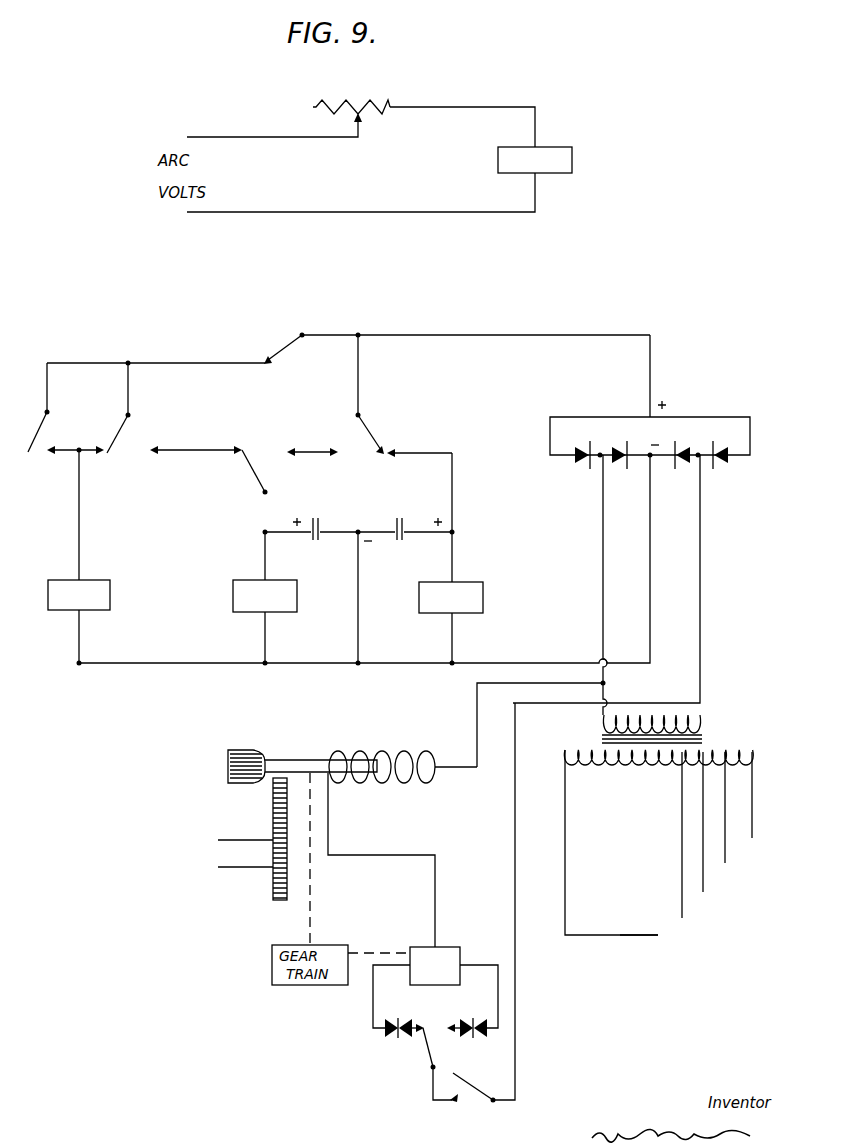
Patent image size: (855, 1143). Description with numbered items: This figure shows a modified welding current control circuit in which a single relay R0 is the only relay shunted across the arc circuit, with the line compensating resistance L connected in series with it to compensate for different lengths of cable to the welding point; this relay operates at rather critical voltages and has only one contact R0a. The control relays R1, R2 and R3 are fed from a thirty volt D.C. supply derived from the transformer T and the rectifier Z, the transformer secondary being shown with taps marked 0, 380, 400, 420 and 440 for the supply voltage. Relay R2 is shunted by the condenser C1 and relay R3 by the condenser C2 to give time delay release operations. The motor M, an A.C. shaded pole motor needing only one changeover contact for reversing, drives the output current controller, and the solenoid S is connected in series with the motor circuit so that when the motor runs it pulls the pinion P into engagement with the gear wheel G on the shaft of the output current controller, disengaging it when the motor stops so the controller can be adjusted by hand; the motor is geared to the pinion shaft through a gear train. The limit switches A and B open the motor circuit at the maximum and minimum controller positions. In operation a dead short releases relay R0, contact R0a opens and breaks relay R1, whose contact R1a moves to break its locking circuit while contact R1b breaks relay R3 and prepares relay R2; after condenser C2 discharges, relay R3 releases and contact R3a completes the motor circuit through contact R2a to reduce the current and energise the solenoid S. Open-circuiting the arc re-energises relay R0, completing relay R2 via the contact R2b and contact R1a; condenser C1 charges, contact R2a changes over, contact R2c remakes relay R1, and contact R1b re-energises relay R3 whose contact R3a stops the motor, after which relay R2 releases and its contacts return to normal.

The line compensating resistance L is at (288, 109).
The contact of relay R0 R0a is at (450, 347).
The contact of relay R2 R2c is at (162, 513).
The contact of relay R1 R1a is at (100, 408).
The contact of relay R1 R1b is at (250, 499).
The contact of relay R2 R2b is at (244, 470).
The condenser C1 is at (317, 525).
The condenser C2 is at (405, 525).
The contact of relay R3 R3a is at (467, 817).
The rectifier Z is at (710, 423).
The transformer T is at (707, 740).
The transformer zero tap 0 is at (646, 937).
The transformer 380 volt tap 380 is at (697, 838).
The transformer 400 volt tap 400 is at (718, 824).
The transformer 420 volt tap 420 is at (740, 811).
The transformer 440 volt tap 440 is at (768, 798).
The solenoid S is at (383, 752).
The pinion P is at (237, 750).
The gear wheel G is at (273, 811).
The motor M is at (435, 966).
The limit switch B is at (404, 1018).
The limit switch A is at (467, 1018).
The contact of relay R2 R2a is at (417, 1050).